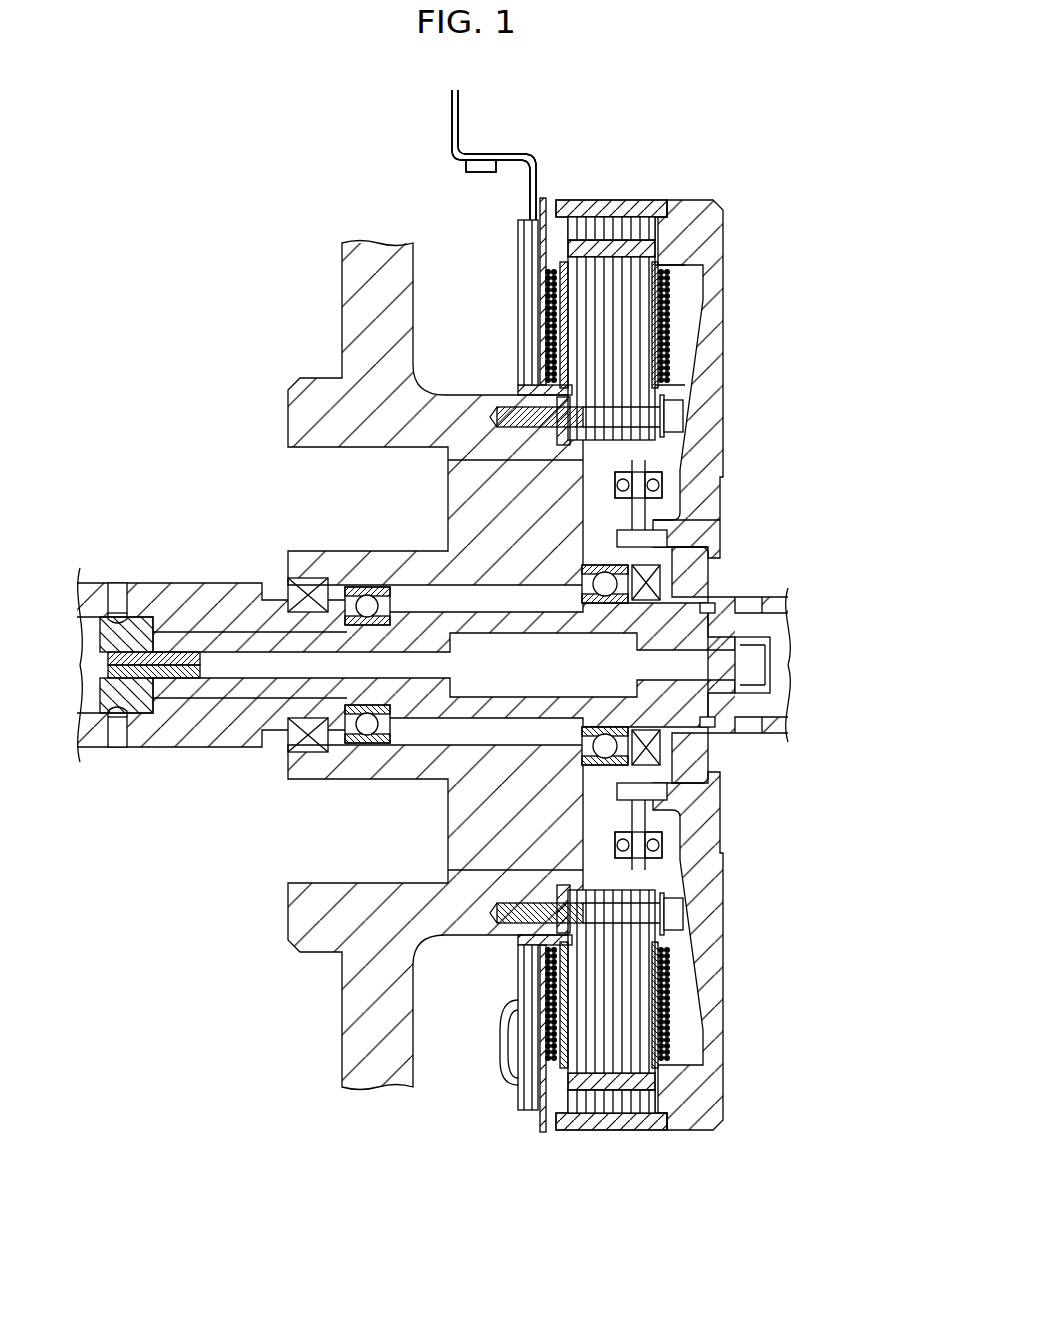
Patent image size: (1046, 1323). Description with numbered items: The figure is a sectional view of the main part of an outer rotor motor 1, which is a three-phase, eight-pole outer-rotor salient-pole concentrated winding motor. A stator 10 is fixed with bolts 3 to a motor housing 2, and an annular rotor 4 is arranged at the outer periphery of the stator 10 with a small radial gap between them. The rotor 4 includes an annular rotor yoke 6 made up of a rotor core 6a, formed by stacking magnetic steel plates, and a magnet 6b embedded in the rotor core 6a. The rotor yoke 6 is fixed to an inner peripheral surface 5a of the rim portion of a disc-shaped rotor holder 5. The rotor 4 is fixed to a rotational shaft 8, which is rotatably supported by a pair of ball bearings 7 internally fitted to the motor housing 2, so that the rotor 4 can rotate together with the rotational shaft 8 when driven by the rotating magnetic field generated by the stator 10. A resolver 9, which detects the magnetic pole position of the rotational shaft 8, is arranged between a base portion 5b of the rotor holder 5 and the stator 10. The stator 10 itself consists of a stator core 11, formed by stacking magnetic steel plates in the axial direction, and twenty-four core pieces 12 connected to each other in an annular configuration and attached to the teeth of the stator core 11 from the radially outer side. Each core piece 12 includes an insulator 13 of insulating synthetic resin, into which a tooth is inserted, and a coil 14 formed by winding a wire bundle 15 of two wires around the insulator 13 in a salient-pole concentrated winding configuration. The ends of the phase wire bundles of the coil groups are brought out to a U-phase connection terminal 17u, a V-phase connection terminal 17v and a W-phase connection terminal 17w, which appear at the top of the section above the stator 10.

The outer rotor motor 1 is at (728, 168).
The motor housing 2 is at (355, 278).
The bolts 3 is at (672, 416).
The rotor 4 is at (646, 200).
The rotor holder 5 is at (718, 276).
The inner peripheral surface 5a is at (662, 232).
The base portion 5b is at (663, 535).
The rotor yoke 6 is at (628, 147).
The rotor core 6a is at (577, 225).
The magnet 6b is at (610, 250).
The ball bearings 7 is at (600, 565).
The rotational shaft 8 is at (693, 580).
The resolver 9 is at (655, 489).
The stator 10 is at (495, 265).
The stator core 11 is at (640, 298).
The core pieces 12 is at (692, 311).
The insulator 13 is at (672, 354).
The coil 14 is at (690, 338).
The wire bundle 15 is at (533, 180).
The U-phase connection terminal 17u is at (458, 107).
The V-phase connection terminal 17v is at (494, 155).
The W-phase connection terminal 17w is at (494, 155).